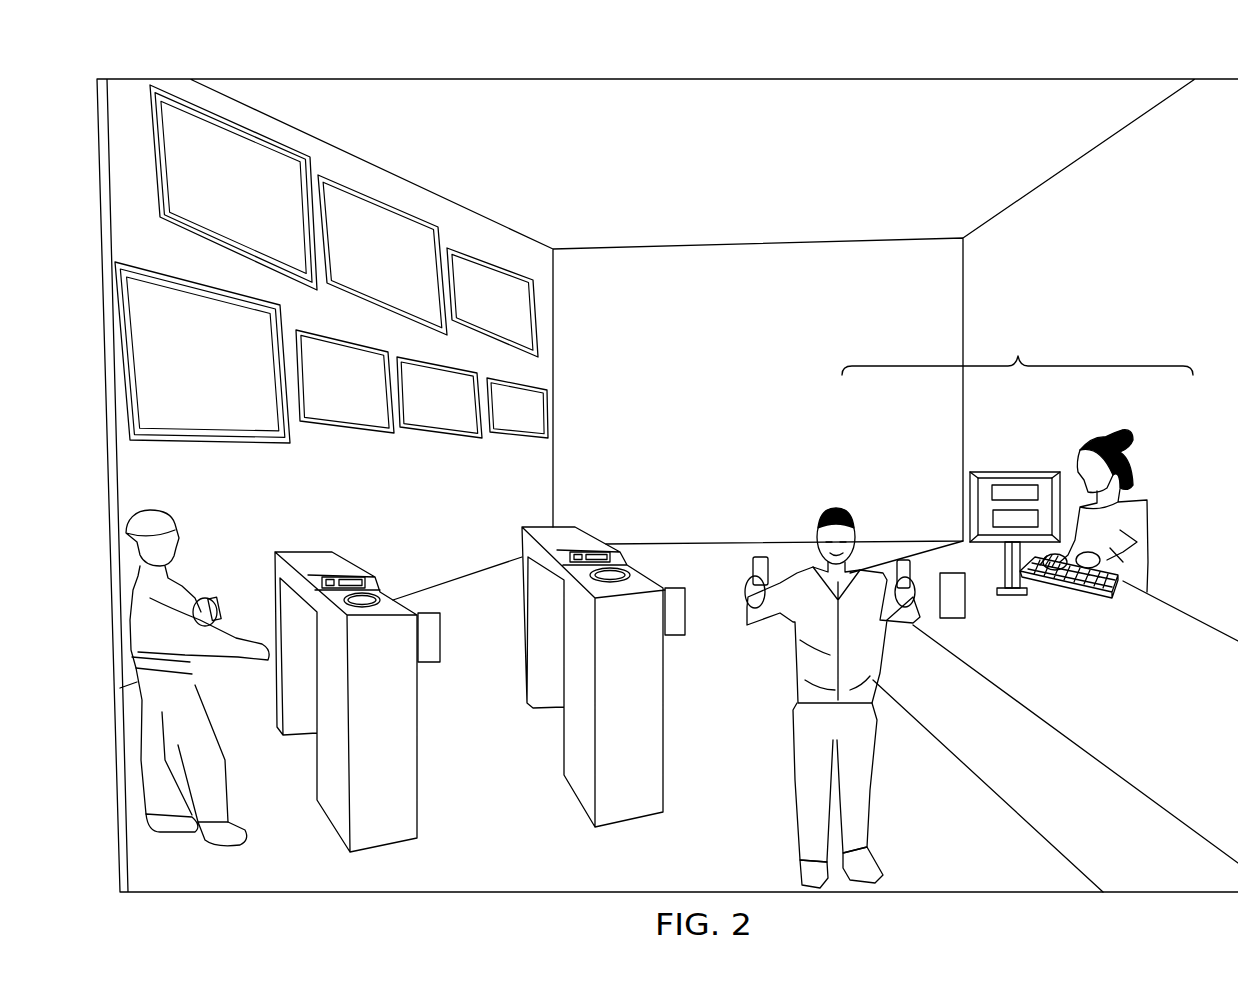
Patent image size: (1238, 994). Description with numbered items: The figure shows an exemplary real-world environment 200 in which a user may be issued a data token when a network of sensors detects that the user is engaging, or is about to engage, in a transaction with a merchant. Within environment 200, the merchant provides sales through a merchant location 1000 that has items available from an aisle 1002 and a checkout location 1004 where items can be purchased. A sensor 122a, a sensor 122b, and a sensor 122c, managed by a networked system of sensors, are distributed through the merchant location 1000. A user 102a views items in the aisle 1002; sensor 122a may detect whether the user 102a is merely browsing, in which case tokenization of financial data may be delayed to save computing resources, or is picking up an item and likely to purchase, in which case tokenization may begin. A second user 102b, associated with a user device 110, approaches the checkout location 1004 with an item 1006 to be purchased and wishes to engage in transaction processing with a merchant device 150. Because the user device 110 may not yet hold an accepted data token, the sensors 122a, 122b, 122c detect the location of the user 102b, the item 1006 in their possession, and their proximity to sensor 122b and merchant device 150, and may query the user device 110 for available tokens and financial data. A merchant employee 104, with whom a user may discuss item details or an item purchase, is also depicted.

The environment 200 is at (1137, 65).
The merchant location 1000 is at (932, 150).
The aisle 1002 is at (309, 548).
The checkout location 1004 is at (1040, 607).
The user 102a is at (162, 512).
The user 102b is at (801, 670).
The merchant / cashier 104 is at (1110, 463).
The user device 110 is at (898, 560).
The item 1006 is at (750, 597).
The merchant device 150 is at (998, 476).
The sensor 122a is at (432, 655).
The sensor 122b is at (962, 616).
The sensor 122c is at (677, 634).